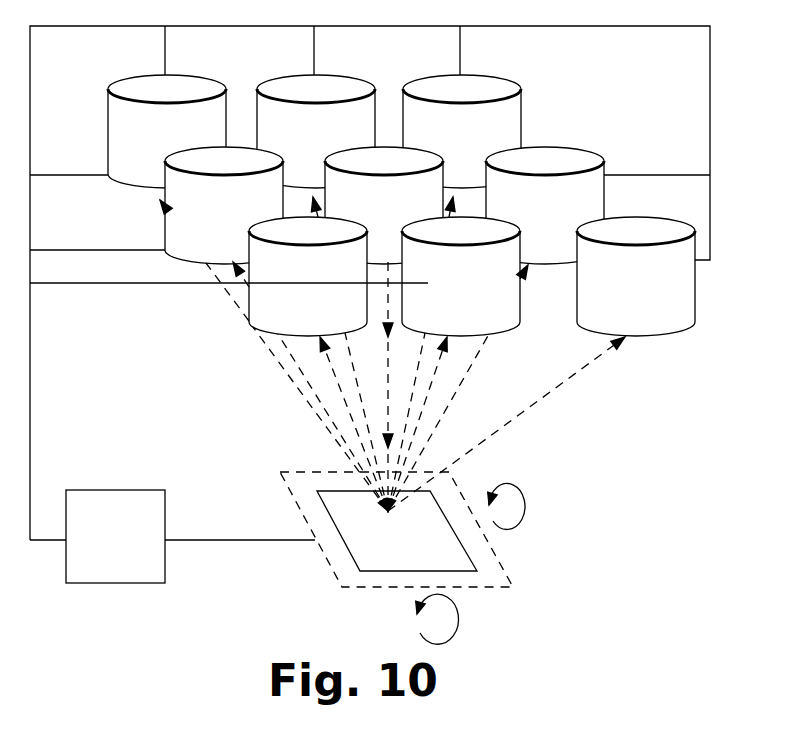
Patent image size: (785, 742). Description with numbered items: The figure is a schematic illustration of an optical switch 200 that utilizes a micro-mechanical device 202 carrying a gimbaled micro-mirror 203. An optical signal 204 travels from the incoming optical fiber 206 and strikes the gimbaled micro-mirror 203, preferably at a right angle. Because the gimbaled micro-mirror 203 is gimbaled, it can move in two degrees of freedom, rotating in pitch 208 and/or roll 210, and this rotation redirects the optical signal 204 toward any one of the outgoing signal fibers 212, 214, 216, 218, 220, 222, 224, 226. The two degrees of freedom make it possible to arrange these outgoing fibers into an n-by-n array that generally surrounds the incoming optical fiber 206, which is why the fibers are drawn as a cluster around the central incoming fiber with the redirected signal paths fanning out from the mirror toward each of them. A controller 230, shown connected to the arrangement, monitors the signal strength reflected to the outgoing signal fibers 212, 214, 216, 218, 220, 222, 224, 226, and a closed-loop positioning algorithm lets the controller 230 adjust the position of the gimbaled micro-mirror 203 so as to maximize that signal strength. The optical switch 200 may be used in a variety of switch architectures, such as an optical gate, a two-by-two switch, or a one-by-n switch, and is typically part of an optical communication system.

The optical switch 200 is at (607, 430).
The micro-mechanical device 202 is at (500, 552).
The gimbaled micro-mirror 203 is at (337, 500).
The optical signal 204 is at (387, 365).
The incoming optical fiber 206 is at (361, 204).
The pitch 208 is at (457, 621).
The roll 210 is at (526, 512).
The outgoing signal fiber 212 is at (613, 274).
The outgoing signal fiber 214 is at (522, 204).
The outgoing signal fiber 216 is at (439, 132).
The outgoing signal fiber 218 is at (293, 132).
The outgoing signal fiber 220 is at (144, 132).
The outgoing signal fiber 222 is at (201, 204).
The outgoing signal fiber 224 is at (285, 274).
The outgoing signal fiber 226 is at (438, 274).
The controller 230 is at (92, 537).